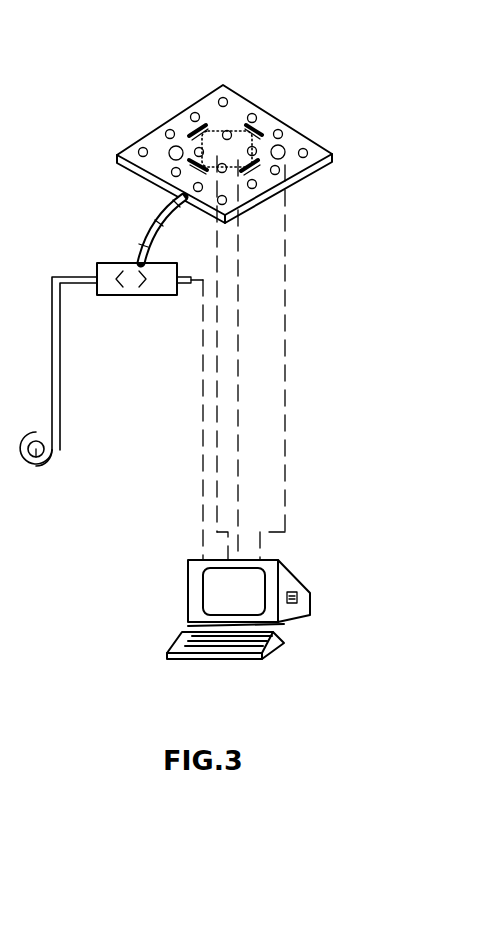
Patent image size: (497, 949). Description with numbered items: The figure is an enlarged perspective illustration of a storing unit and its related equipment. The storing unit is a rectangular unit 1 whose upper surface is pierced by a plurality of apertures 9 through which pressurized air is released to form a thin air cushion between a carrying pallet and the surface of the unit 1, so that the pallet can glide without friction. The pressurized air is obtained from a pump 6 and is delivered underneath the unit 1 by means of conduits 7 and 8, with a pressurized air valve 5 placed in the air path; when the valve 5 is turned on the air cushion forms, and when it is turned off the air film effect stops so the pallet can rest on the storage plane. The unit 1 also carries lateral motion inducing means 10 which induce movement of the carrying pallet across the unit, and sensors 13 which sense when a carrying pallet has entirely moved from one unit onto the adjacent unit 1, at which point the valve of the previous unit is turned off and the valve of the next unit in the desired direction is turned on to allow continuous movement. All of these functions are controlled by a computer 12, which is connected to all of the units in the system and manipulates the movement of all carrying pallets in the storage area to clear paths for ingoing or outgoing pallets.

The rectangular unit 1 is at (246, 96).
The pressurized air valve 5 is at (158, 284).
The pump 6 is at (33, 457).
The conduit 7 is at (56, 350).
The conduit 8 is at (146, 235).
The apertures 9 is at (143, 147).
The lateral motion inducing means 10 is at (257, 128).
The computer 12 is at (220, 597).
The sensors 13 is at (280, 150).